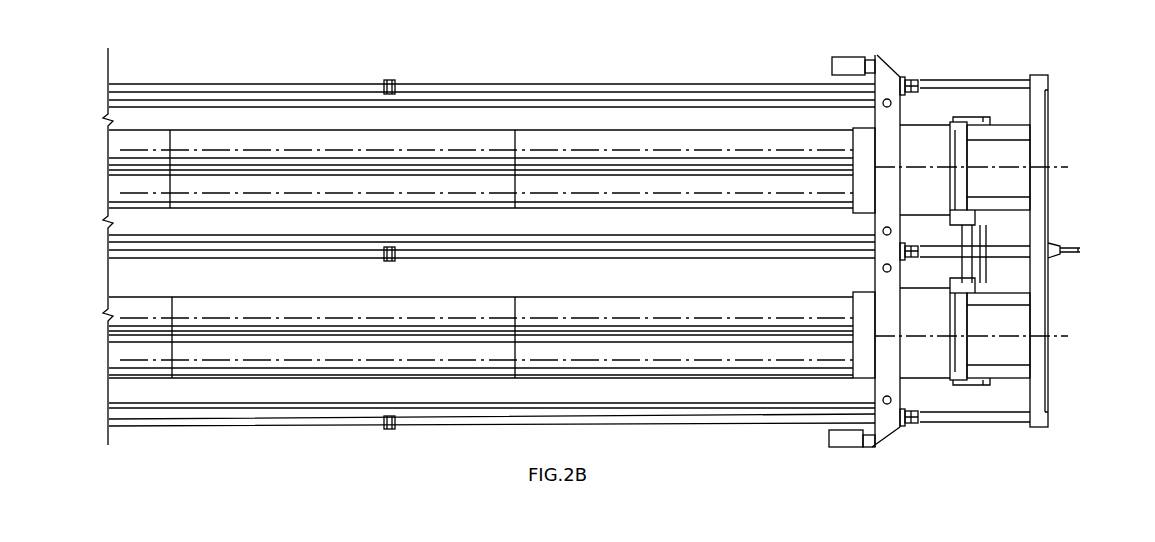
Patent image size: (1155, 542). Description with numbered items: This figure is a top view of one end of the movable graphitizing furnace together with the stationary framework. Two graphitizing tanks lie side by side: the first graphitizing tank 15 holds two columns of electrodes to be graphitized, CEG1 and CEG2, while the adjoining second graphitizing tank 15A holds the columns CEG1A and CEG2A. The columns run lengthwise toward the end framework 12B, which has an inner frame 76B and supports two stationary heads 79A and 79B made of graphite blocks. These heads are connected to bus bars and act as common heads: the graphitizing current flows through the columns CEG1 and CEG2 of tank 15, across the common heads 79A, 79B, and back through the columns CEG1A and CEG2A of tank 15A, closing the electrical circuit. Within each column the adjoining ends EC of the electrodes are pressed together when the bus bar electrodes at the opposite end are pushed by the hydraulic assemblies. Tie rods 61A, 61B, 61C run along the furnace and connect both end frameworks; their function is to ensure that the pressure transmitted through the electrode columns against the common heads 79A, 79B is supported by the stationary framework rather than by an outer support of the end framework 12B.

The adjoining ends of the electrodes to be graphitized EC is at (179, 150).
The first graphitizing tank 15 is at (262, 115).
The column of electrodes to be graphitized CEG1 is at (328, 143).
The column of electrodes to be graphitized CEG2 is at (429, 190).
The tie rod 61C is at (748, 101).
The inner frame 76B is at (887, 119).
The end framework 12B is at (957, 63).
The stationary head 79A is at (930, 142).
The second graphitizing tank 15A is at (263, 392).
The column of electrodes to be graphitized CEG1A is at (345, 318).
The column of electrodes to be graphitized CEG2A is at (462, 355).
The tie rod 61A is at (692, 405).
The tie rod 61B is at (760, 250).
The stationary head 79B is at (917, 355).